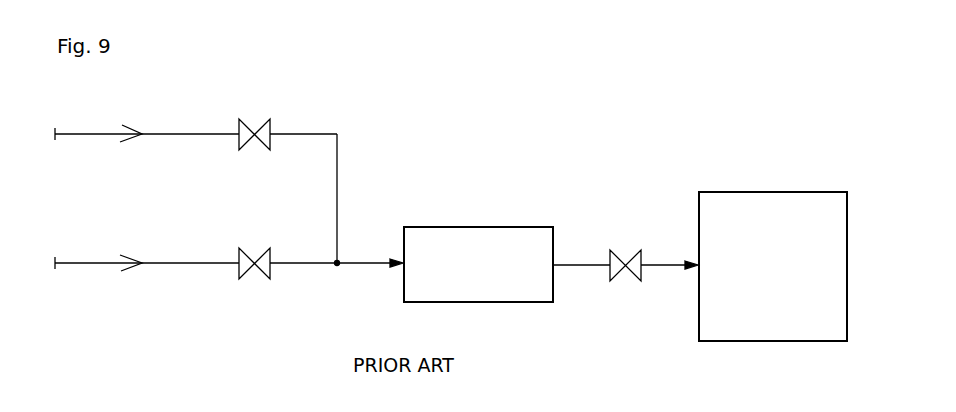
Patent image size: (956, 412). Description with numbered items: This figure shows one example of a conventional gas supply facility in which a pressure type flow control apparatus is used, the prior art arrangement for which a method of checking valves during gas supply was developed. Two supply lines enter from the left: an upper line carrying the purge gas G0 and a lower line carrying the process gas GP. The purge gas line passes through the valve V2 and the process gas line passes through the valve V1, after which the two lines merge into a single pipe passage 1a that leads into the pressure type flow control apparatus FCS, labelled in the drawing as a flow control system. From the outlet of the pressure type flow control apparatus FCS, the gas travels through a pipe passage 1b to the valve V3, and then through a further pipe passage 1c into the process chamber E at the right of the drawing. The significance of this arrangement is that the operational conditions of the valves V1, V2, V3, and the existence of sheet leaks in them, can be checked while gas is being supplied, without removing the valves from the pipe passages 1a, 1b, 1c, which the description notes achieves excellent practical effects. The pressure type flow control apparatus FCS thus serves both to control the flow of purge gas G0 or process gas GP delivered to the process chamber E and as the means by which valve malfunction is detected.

The purge gas G0 is at (129, 126).
The process gas GP is at (133, 270).
The valve V1 is at (252, 279).
The valve V2 is at (250, 118).
The valve V3 is at (622, 250).
The pipe passage 1a is at (371, 260).
The pipe passage 1b is at (580, 262).
The pipe passage 1c is at (668, 262).
The pressure type flow control apparatus FCS is at (485, 226).
The process chamber E is at (774, 192).